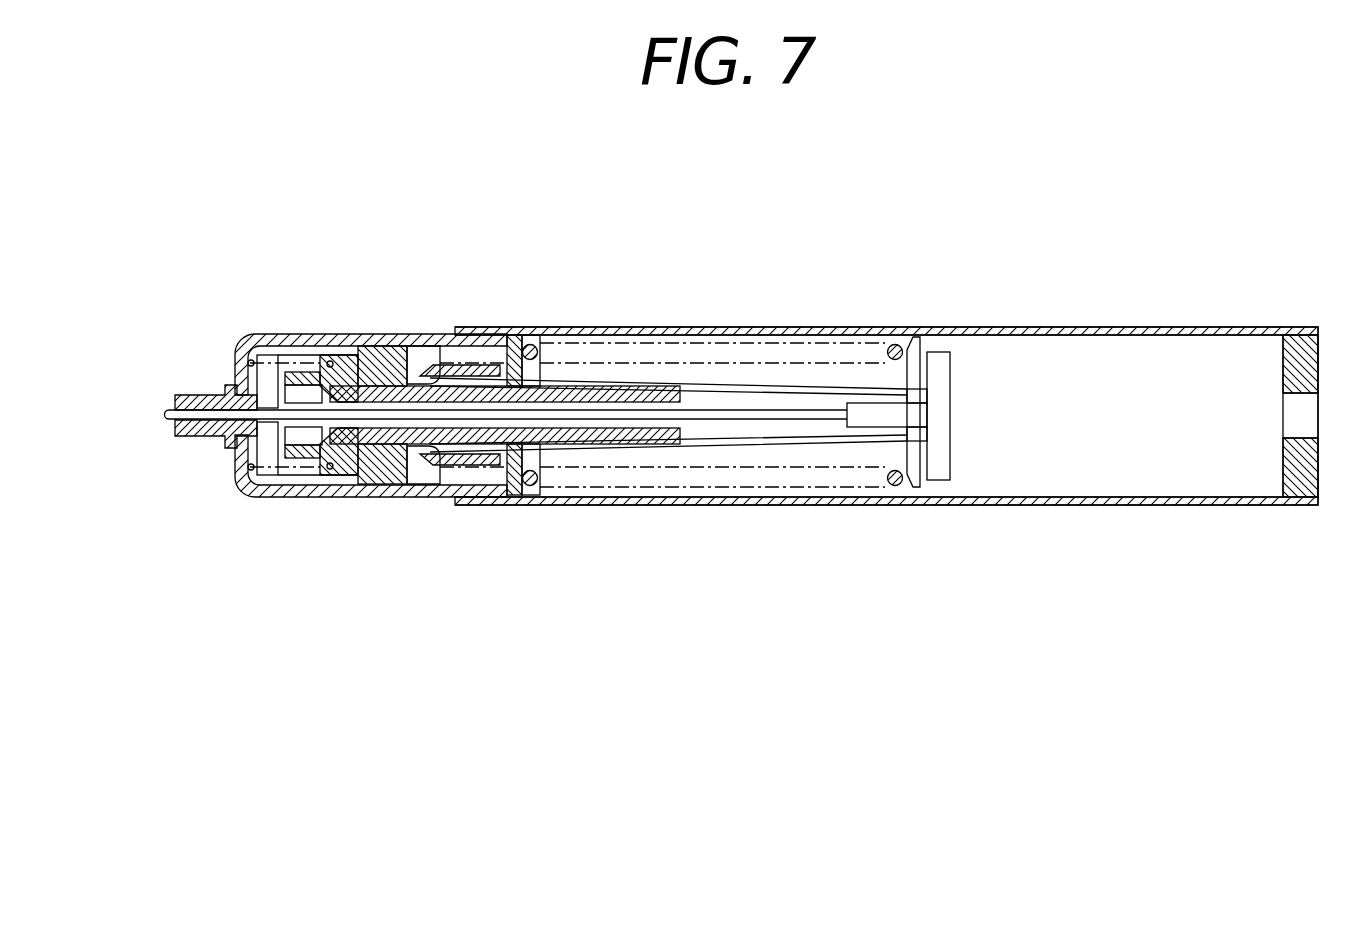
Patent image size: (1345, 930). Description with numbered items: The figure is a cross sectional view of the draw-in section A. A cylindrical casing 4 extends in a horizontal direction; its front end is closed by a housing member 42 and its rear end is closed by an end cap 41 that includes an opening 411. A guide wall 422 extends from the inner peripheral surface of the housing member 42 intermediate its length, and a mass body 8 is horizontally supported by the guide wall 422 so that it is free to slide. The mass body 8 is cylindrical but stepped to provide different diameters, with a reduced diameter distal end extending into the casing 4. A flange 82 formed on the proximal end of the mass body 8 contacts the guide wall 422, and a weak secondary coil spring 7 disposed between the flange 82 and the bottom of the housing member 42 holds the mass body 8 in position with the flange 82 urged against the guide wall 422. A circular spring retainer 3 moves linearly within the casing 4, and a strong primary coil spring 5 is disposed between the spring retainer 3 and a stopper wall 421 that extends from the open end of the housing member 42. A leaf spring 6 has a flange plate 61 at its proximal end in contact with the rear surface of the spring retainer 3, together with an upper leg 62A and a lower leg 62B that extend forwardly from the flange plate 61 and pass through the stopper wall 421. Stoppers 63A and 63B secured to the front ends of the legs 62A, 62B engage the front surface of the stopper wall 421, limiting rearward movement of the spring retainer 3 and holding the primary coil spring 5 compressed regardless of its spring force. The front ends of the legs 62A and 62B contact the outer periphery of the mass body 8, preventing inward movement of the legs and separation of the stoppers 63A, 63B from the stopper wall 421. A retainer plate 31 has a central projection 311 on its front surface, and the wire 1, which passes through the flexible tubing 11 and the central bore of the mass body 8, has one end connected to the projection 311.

The wire 1 is at (708, 420).
The spring retainer 3 is at (935, 470).
The retainer plate 31 is at (948, 470).
The central projection 311 is at (870, 410).
The casing 4 is at (853, 328).
The end cap 41 is at (1300, 338).
The opening 411 is at (1295, 417).
The housing member 42 is at (320, 345).
The stopper wall 421 is at (513, 335).
The guide wall 422 is at (386, 346).
The primary coil spring 5 is at (898, 345).
The leaf spring 6 is at (706, 366).
The flange plate 61 is at (915, 345).
The upper leg 62A is at (770, 384).
The lower leg 62B is at (770, 445).
The stopper 63A is at (452, 366).
The stopper 63B is at (460, 465).
The secondary coil spring 7 is at (274, 350).
The mass body 8 is at (402, 444).
The flange 82 is at (335, 470).
The flexible tubing 11 is at (200, 395).
The draw-in section A is at (636, 312).